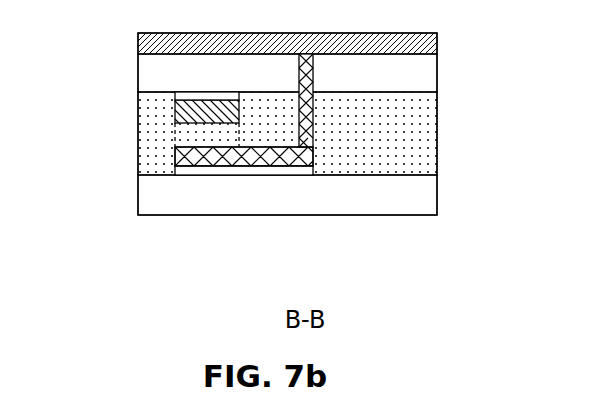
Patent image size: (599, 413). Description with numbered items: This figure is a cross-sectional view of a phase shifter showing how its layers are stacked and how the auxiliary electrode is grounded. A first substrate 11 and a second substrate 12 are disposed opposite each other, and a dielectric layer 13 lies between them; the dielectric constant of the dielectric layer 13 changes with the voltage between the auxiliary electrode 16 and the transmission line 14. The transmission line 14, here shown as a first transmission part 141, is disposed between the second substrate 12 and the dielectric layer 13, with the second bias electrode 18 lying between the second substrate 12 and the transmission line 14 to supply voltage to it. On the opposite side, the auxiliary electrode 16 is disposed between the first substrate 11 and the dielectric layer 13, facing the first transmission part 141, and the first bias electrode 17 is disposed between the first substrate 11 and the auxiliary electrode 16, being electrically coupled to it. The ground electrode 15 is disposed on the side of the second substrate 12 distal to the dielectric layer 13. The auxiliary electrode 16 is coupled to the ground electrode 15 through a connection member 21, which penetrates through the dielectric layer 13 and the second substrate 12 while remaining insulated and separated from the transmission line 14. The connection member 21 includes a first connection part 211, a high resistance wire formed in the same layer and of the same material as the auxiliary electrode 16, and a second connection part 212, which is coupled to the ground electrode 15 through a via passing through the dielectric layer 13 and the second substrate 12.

The first substrate 11 is at (437, 197).
The second substrate 12 is at (437, 73).
The dielectric layer 13 is at (437, 117).
The transmission line 14 is at (148, 117).
The first transmission part 141 is at (210, 112).
The ground electrode 15 is at (316, 33).
The auxiliary electrode 16 is at (182, 155).
The first bias electrode 17 is at (188, 169).
The second bias electrode 18 is at (190, 96).
The connection member 21 is at (267, 174).
The first connection part 211 is at (272, 160).
The second connection part 212 is at (304, 152).